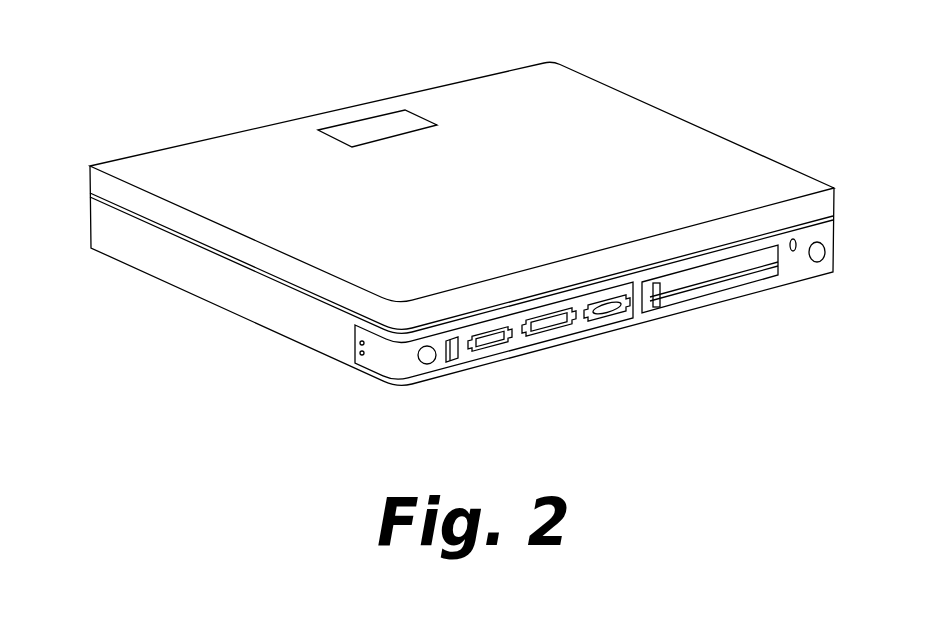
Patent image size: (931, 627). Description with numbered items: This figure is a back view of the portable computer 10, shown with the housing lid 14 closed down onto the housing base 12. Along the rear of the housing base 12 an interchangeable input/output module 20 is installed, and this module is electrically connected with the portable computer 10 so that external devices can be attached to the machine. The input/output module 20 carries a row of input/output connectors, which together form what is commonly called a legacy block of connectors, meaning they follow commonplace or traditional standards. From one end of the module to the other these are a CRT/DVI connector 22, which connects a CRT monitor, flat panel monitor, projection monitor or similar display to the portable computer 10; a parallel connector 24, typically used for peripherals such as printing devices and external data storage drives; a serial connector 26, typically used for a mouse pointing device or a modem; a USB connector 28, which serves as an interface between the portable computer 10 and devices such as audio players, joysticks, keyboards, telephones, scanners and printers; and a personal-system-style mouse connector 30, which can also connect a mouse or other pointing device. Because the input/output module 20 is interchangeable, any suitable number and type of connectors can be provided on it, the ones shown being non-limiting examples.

The portable computer 10 is at (700, 60).
The housing base 12 is at (167, 283).
The housing lid 14 is at (218, 135).
The input/output module 20 is at (393, 362).
The CRT/DVI connector 22 is at (609, 319).
The parallel connector 24 is at (551, 332).
The serial connector 26 is at (496, 353).
The USB connector 28 is at (453, 361).
The PS/2 connector 30 is at (429, 366).